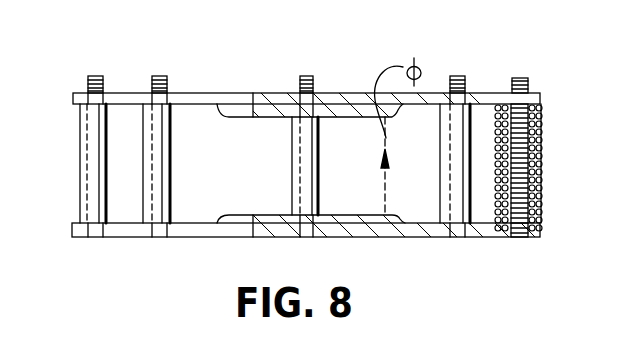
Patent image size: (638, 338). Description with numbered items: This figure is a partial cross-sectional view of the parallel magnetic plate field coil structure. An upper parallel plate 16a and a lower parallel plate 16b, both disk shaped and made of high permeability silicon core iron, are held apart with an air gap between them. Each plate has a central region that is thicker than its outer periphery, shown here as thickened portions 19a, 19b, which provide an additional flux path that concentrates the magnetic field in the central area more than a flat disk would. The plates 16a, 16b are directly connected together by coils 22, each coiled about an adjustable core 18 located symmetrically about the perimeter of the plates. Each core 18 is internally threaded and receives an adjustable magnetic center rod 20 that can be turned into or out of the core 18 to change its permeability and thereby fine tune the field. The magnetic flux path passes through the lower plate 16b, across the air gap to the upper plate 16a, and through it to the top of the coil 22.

The upper parallel plate 16a is at (208, 102).
The lower parallel plate 16b is at (222, 238).
The adjustable core 18 is at (103, 127).
The thickened portion of upper bar 19a is at (252, 120).
The thickened portion of lower bar 19b is at (257, 215).
The adjustable magnetic center rod 20 is at (152, 77).
The coil 22 is at (541, 163).